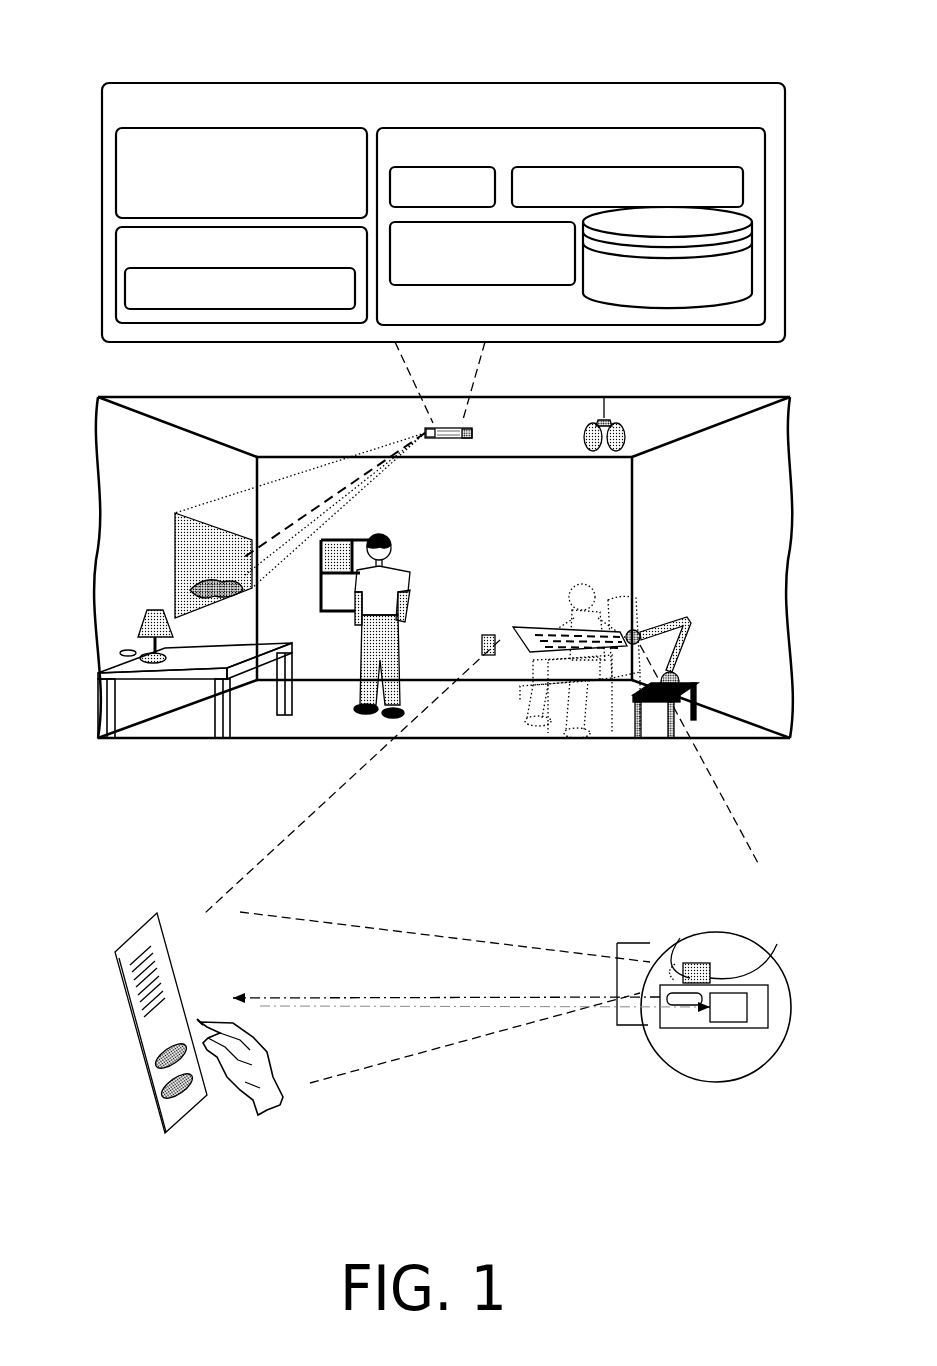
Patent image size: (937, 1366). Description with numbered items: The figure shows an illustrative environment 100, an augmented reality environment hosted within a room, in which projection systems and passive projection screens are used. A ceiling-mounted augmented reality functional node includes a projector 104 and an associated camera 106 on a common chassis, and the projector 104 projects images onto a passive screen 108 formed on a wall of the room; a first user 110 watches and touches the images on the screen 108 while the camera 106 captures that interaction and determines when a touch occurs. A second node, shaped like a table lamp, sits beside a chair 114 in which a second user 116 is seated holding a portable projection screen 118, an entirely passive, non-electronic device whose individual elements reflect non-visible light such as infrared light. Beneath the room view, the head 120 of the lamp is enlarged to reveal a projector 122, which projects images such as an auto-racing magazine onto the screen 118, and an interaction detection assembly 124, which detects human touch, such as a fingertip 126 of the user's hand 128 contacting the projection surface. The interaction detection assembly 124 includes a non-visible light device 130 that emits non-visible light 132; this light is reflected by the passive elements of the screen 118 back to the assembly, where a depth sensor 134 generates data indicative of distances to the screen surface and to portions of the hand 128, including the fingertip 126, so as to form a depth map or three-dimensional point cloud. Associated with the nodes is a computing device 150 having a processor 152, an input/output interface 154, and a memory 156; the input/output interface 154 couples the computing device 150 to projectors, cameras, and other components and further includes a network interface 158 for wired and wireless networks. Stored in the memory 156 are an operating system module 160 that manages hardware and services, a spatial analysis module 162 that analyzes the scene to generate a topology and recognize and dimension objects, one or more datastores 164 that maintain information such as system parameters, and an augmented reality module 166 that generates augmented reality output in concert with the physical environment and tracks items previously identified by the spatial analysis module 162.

The environment 100 is at (105, 42).
The projector 104 is at (425, 431).
The camera 106 is at (473, 430).
The passive screen 108 is at (172, 562).
The first user 110 is at (405, 562).
The chair 114 is at (622, 597).
The second user 116 is at (572, 583).
The portable projection screen 118 is at (527, 630).
The head 120 is at (667, 888).
The projector 122 is at (695, 963).
The interaction detection assembly 124 is at (768, 992).
The fingertip 126 is at (203, 1017).
The hand 128 is at (273, 1107).
The non-visible light device 130 is at (677, 1005).
The non-visible light 132 is at (503, 997).
The depth sensor 134 is at (730, 1022).
The computing device 150 is at (443, 212).
The processor 152 is at (241, 173).
The input/output interface 154 is at (241, 275).
The memory 156 is at (571, 226).
The network interface 158 is at (240, 288).
The operating system module 160 is at (442, 187).
The spatial analysis module 162 is at (482, 253).
The datastores 164 is at (667, 257).
The augmented reality module 166 is at (627, 187).